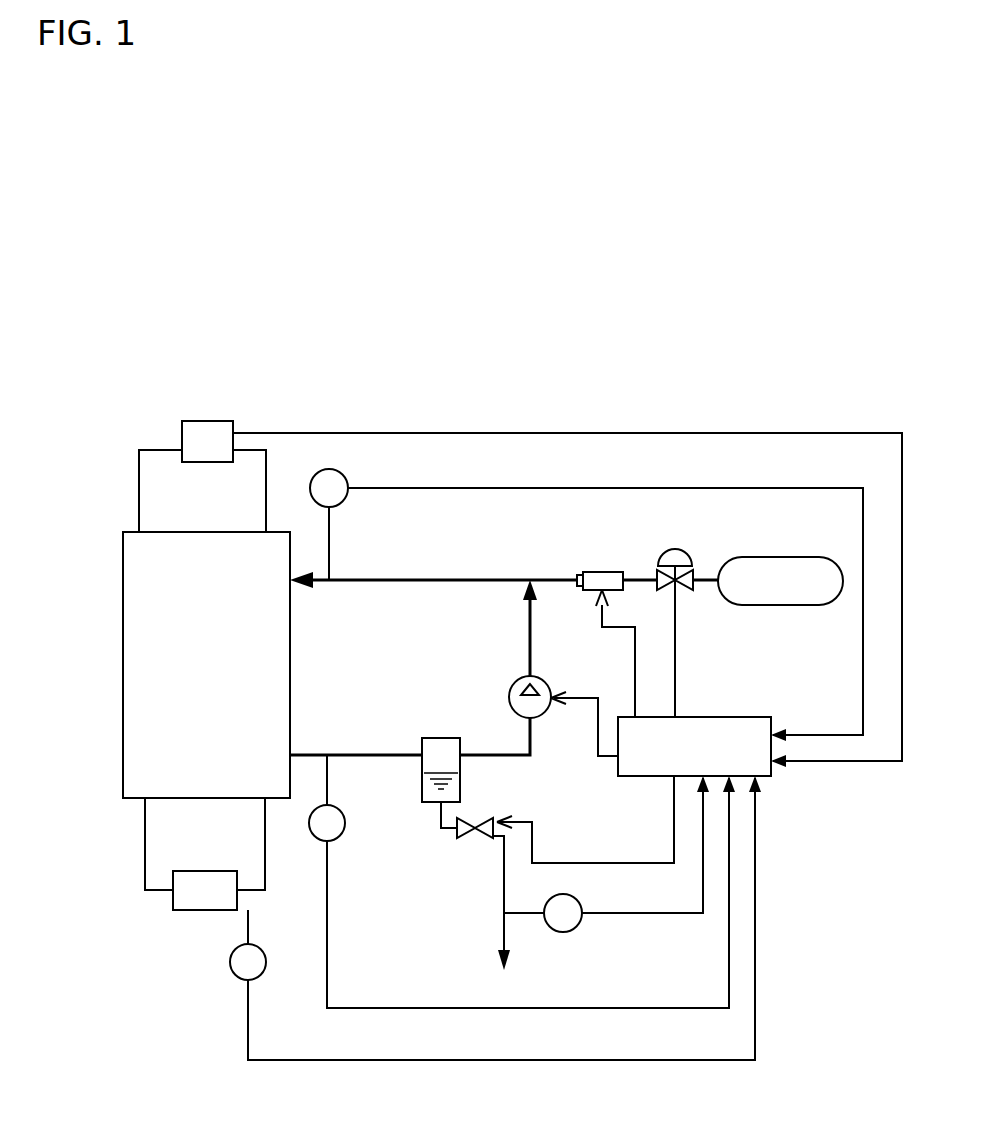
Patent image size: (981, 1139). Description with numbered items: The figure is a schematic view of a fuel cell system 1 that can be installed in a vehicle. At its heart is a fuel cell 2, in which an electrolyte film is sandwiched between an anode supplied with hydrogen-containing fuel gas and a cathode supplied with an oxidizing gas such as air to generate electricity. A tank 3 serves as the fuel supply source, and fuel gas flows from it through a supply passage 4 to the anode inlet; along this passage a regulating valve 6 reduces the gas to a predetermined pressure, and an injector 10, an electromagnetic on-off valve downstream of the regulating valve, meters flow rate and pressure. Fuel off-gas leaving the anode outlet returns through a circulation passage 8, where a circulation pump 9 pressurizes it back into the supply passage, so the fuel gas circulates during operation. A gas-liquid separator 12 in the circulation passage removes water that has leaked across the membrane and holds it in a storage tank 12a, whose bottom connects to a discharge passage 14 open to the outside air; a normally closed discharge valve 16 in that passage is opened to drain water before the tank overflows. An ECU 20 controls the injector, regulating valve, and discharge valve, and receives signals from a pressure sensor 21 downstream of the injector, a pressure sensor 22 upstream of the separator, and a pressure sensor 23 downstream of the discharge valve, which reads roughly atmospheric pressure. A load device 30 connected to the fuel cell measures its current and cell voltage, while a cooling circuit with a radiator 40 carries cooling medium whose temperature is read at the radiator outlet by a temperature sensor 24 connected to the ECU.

The fuel cell system 1 is at (651, 396).
The fuel cell 2 is at (290, 631).
The tank 3 is at (769, 557).
The supply passage 4 is at (405, 578).
The regulating valve 6 is at (688, 548).
The circulation passage 8 is at (531, 627).
The circulation pump 9 is at (549, 685).
The injector 10 is at (600, 572).
The gas-liquid separator 12 is at (450, 738).
The storage tank 12a is at (422, 788).
The discharge passage 14 is at (440, 826).
The discharge valve 16 is at (482, 818).
The ECU 20 is at (741, 717).
The pressure sensor 21 is at (347, 476).
The pressure sensor 22 is at (340, 834).
The pressure sensor 23 is at (576, 927).
The temperature sensor 24 is at (265, 960).
The load device 30 is at (218, 421).
The radiator 40 is at (213, 871).